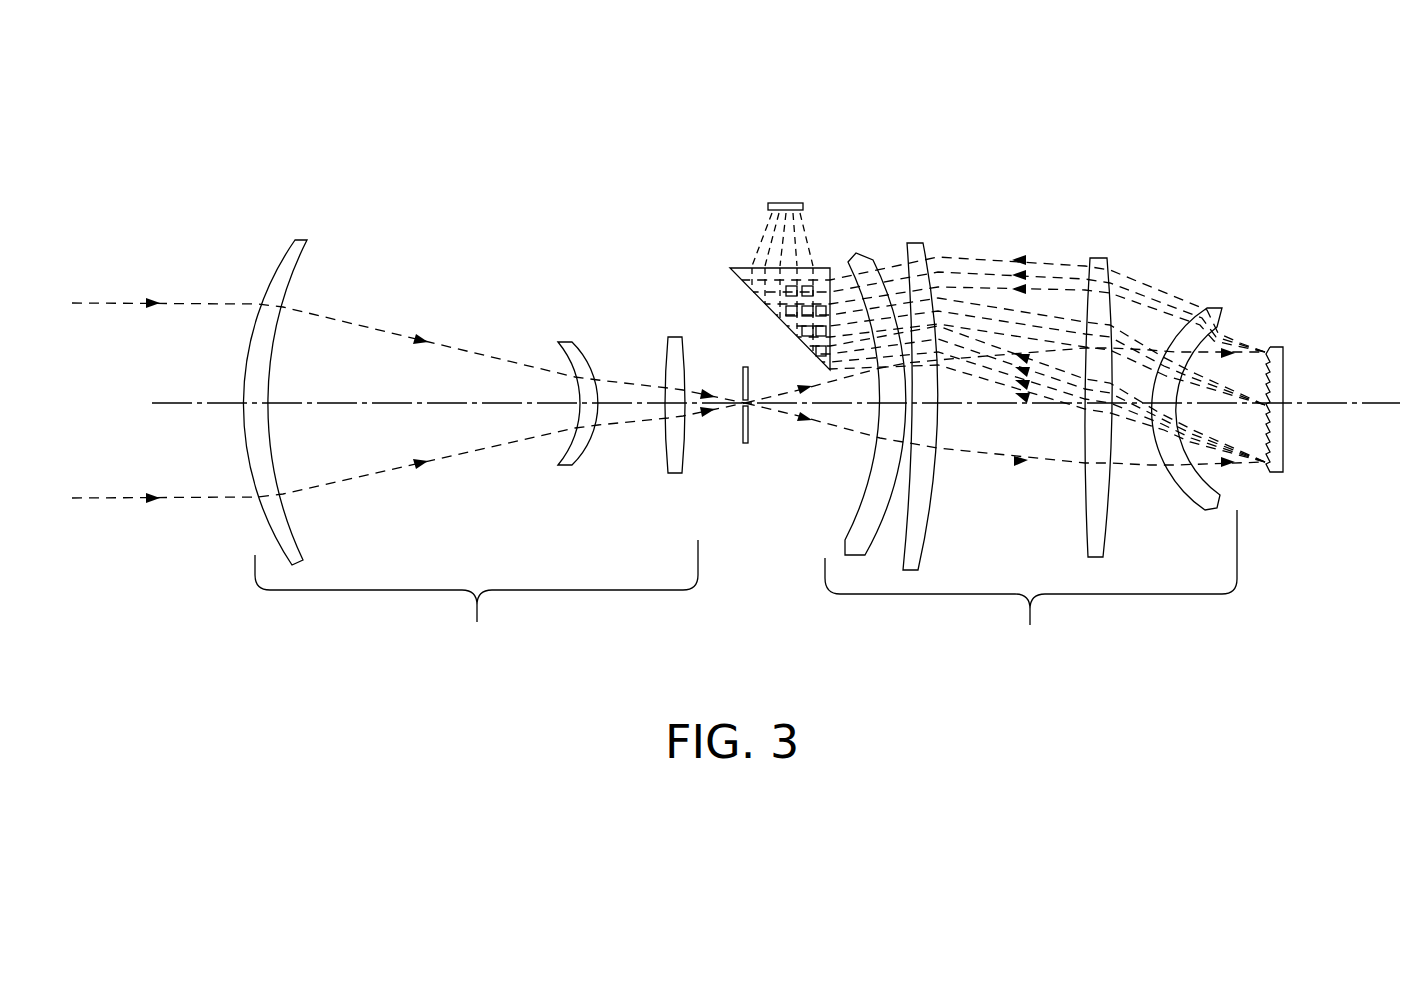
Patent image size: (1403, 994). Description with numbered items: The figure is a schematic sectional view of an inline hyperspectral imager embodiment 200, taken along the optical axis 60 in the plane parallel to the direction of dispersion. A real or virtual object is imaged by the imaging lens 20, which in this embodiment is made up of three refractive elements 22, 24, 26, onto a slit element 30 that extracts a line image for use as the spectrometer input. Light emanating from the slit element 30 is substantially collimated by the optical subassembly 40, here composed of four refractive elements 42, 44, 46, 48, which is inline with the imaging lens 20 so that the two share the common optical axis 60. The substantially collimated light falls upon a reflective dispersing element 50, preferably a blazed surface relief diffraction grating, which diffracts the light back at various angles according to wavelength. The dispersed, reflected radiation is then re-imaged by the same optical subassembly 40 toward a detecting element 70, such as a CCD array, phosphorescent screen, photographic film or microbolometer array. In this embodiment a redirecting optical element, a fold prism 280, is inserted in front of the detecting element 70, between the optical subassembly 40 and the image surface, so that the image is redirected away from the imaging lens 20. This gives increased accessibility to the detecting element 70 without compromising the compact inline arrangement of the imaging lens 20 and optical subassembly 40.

The inline hyperspectral imager embodiment 200 is at (398, 180).
The imaging lens 20 is at (462, 445).
The refractive element 22 is at (280, 284).
The refractive element 24 is at (573, 353).
The refractive element 26 is at (677, 363).
The slit element 30 is at (750, 422).
The optical subassembly 40 is at (1036, 422).
The refractive element 42 is at (860, 260).
The refractive element 44 is at (915, 247).
The refractive element 46 is at (1100, 263).
The refractive element 48 is at (1217, 318).
The dispersing element 50 is at (1280, 372).
The optical axis 60 is at (192, 401).
The detecting element 70 is at (782, 203).
The fold prism 280 is at (745, 277).